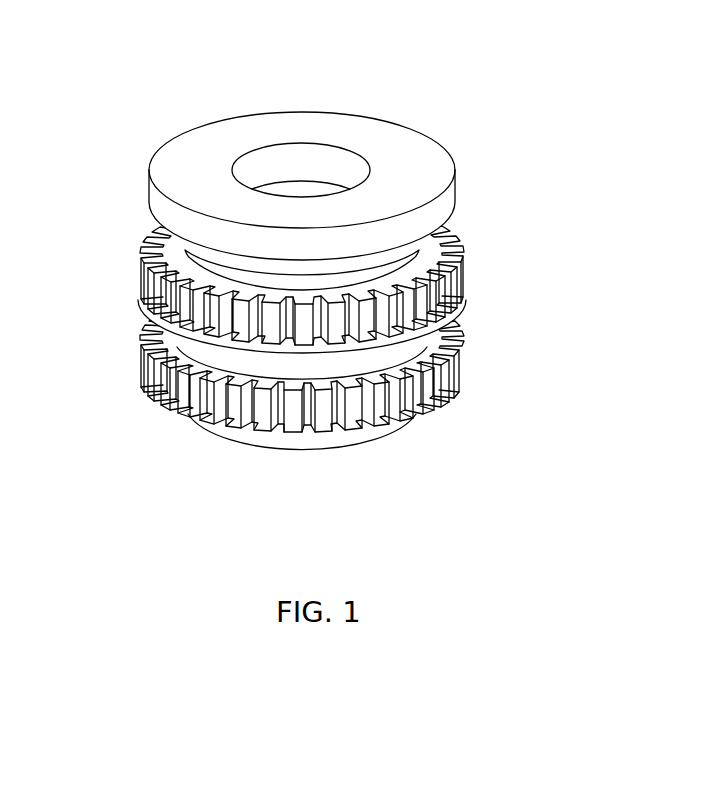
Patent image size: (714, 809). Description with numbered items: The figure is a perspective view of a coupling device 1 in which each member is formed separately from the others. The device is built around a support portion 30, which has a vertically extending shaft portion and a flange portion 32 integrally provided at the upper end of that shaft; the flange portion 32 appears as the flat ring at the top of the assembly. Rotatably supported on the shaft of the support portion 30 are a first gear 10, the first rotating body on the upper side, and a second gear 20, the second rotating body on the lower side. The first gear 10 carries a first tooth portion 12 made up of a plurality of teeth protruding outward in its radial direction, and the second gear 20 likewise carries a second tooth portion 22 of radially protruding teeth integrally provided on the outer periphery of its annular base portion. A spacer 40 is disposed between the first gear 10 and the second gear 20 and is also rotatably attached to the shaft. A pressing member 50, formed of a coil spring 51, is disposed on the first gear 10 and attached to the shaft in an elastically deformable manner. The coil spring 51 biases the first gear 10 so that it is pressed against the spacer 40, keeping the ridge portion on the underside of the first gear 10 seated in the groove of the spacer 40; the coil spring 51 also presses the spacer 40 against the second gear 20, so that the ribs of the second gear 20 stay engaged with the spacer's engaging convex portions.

The coupling device 1 is at (317, 248).
The first gear 10 is at (301, 282).
The first tooth portion 12 is at (134, 273).
The second gear 20 is at (301, 388).
The second tooth portion 22 is at (134, 354).
The support portion 30 is at (318, 160).
The flange portion 32 is at (346, 124).
The spacer 40 is at (374, 360).
The pressing member 50 is at (384, 235).
The coil spring 51 is at (453, 230).